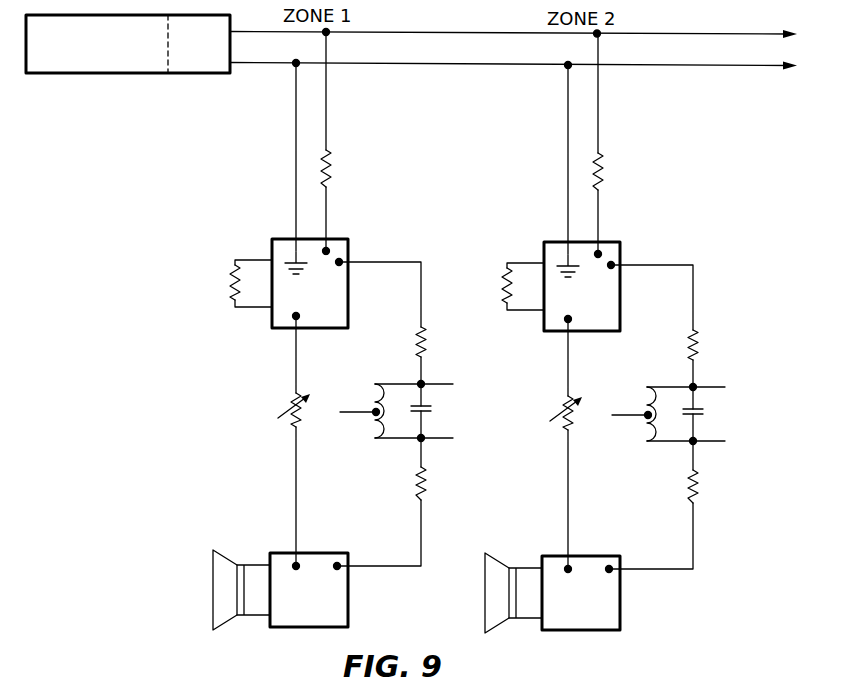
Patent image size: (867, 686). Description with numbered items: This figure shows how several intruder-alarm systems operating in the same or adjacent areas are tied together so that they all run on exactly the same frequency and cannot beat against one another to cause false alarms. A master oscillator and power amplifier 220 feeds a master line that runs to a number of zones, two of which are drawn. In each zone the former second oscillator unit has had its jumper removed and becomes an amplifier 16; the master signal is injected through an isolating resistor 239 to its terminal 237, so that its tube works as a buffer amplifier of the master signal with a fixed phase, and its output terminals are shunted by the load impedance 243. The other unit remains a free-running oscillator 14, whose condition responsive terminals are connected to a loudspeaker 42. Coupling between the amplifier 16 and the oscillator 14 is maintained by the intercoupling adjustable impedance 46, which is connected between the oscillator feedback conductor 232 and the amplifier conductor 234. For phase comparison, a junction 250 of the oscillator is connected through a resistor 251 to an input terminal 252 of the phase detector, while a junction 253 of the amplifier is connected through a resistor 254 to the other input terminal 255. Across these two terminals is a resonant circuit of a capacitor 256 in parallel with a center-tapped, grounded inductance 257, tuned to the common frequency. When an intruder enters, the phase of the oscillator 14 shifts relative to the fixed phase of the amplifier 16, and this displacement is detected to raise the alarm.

The master oscillator and power amplifier 220 is at (70, 74).
The amplifier 16 is at (265, 235).
The isolating resistor 239 is at (329, 176).
The terminal 237 is at (327, 247).
The junction 253 is at (343, 261).
The conductor 234 is at (294, 318).
The impedance 243 is at (233, 290).
The resistor 254 is at (424, 340).
The input terminal 255 is at (423, 382).
The capacitor 256 is at (432, 410).
The input terminal 252 is at (423, 442).
The resistor 251 is at (424, 492).
The inductance 257 is at (376, 396).
The adjustable impedance 46 is at (288, 427).
The oscillator 14 is at (360, 610).
The conductor 232 is at (297, 563).
The junction 250 is at (340, 569).
The loudspeaker 42 is at (230, 620).